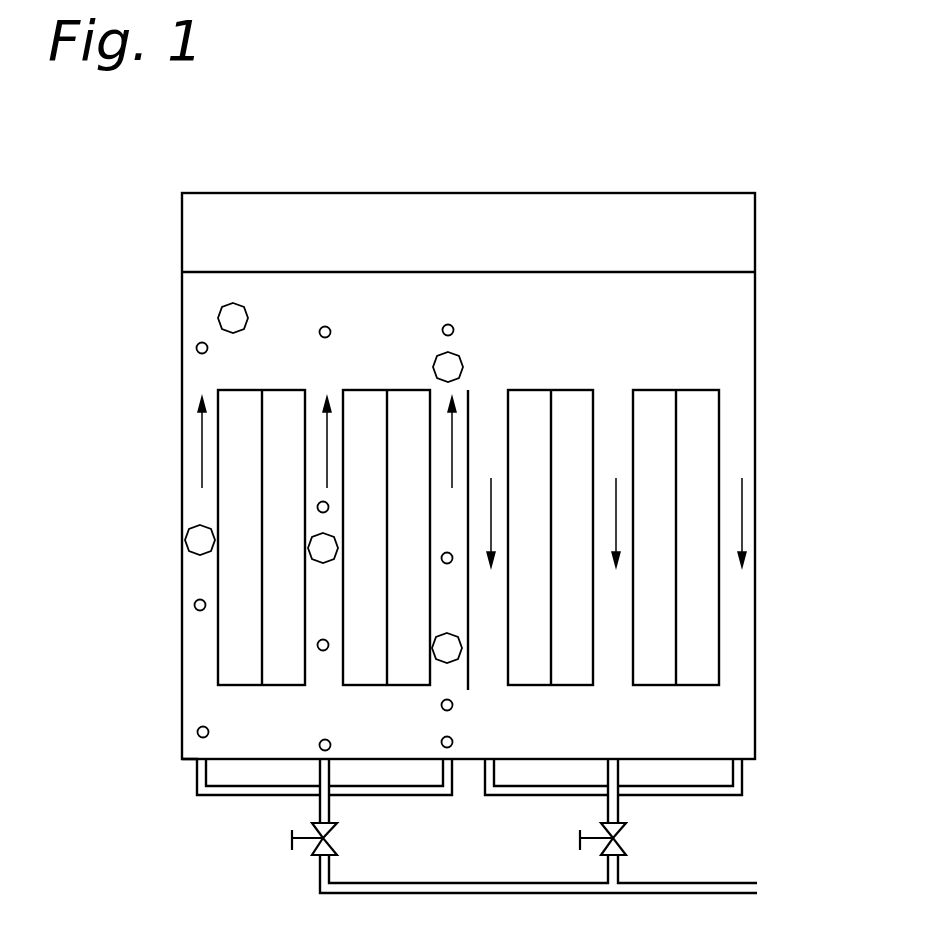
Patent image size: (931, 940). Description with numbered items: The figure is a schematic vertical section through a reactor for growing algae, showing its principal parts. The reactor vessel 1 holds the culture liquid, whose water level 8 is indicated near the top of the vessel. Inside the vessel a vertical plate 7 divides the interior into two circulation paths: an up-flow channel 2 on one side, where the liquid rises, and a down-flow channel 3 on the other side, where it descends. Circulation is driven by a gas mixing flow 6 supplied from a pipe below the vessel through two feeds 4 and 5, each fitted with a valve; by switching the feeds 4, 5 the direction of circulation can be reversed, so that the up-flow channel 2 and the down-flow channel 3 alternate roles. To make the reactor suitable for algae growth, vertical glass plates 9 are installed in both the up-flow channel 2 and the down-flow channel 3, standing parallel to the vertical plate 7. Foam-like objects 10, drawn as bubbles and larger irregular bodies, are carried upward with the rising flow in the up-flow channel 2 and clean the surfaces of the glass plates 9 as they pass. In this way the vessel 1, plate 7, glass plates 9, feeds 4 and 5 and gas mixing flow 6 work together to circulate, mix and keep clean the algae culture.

The reactor vessel 1 is at (755, 322).
The up-flow channel 2 is at (207, 575).
The down-flow channel 3 is at (740, 572).
The feed 4 is at (333, 830).
The feed 5 is at (619, 838).
The gas mixing flow 6 is at (720, 888).
The vertical plate 7 is at (470, 407).
The water level 8 is at (714, 270).
The vertical glass plates 9 is at (240, 451).
The foam-like objects 10 is at (227, 317).